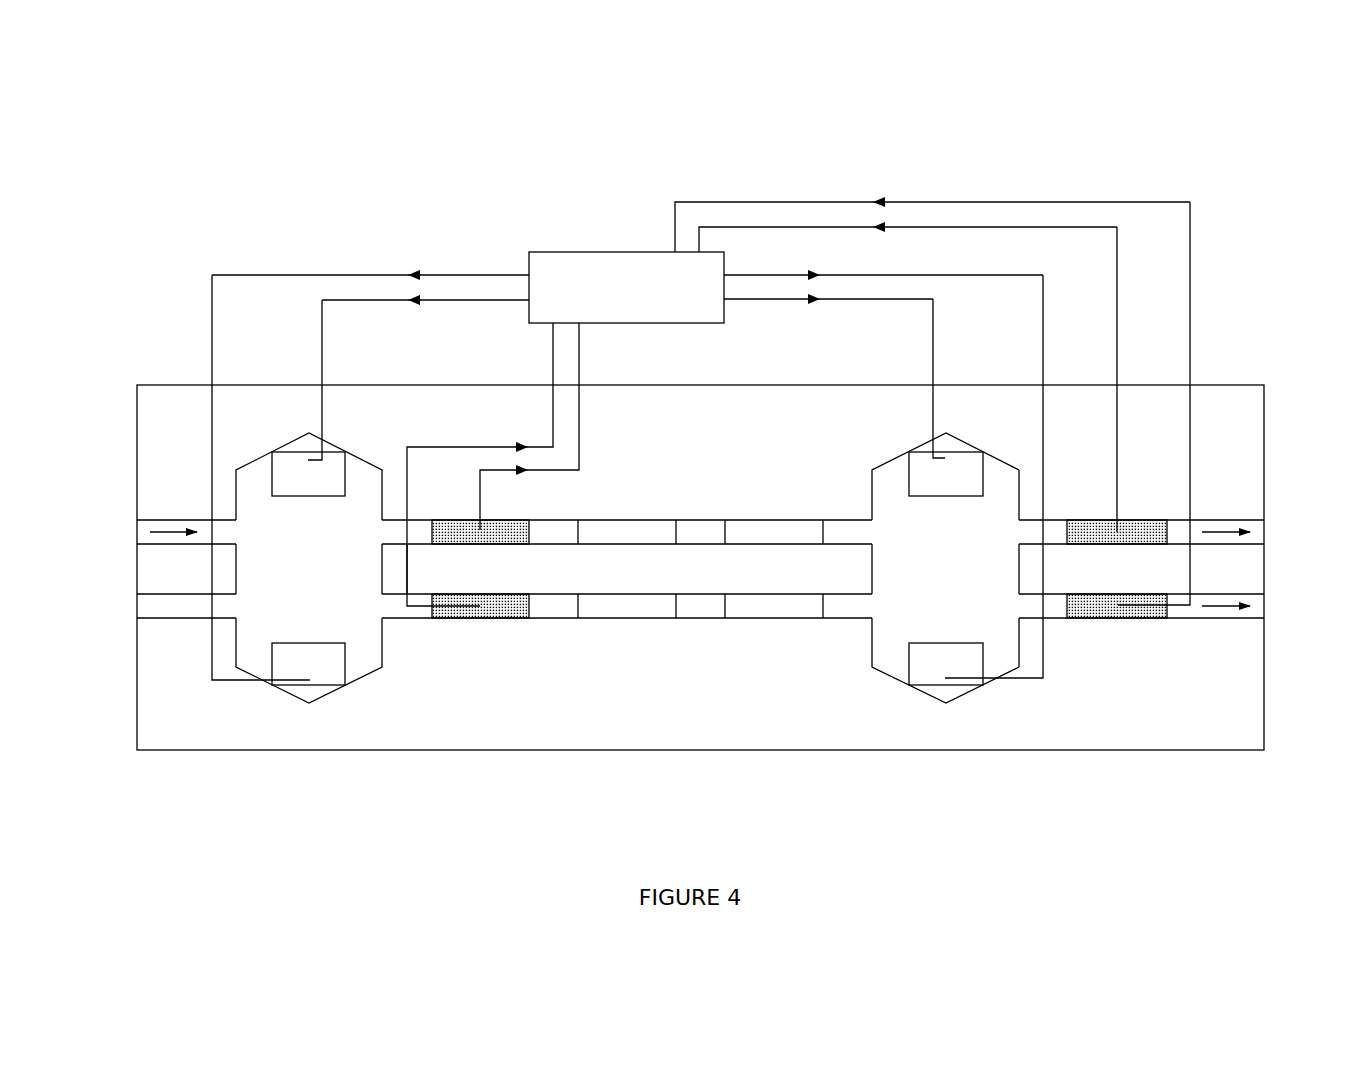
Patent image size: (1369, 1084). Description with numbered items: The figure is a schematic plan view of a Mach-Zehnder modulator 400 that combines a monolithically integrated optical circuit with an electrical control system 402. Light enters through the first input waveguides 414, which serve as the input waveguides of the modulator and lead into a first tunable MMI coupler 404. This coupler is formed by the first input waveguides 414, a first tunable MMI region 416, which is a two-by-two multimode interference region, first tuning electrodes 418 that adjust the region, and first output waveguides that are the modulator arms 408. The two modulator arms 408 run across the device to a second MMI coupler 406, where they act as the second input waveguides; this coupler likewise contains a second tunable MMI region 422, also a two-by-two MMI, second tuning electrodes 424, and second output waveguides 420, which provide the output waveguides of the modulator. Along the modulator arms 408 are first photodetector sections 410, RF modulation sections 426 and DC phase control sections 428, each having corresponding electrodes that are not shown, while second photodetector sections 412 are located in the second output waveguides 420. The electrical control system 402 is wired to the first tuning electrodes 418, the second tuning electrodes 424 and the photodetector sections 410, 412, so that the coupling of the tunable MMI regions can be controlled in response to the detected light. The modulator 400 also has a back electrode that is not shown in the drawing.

The Mach-Zehnder modulator 400 is at (160, 227).
The electrical control system 402 is at (701, 260).
The first tunable MMI coupler 404 is at (212, 717).
The second MMI coupler 406 is at (1020, 703).
The modulator arms 408 is at (395, 520).
The first photodetector sections 410 is at (468, 544).
The second photodetector sections 412 is at (1155, 519).
The first input waveguides 414 is at (147, 518).
The first tunable MMI region 416 is at (235, 485).
The first tuning electrodes 418 is at (297, 447).
The second output waveguides 420 is at (1252, 519).
The second tunable MMI region 422 is at (1020, 480).
The second tuning electrodes 424 is at (957, 445).
The RF modulation sections 426 is at (628, 543).
The DC phase control sections 428 is at (787, 543).